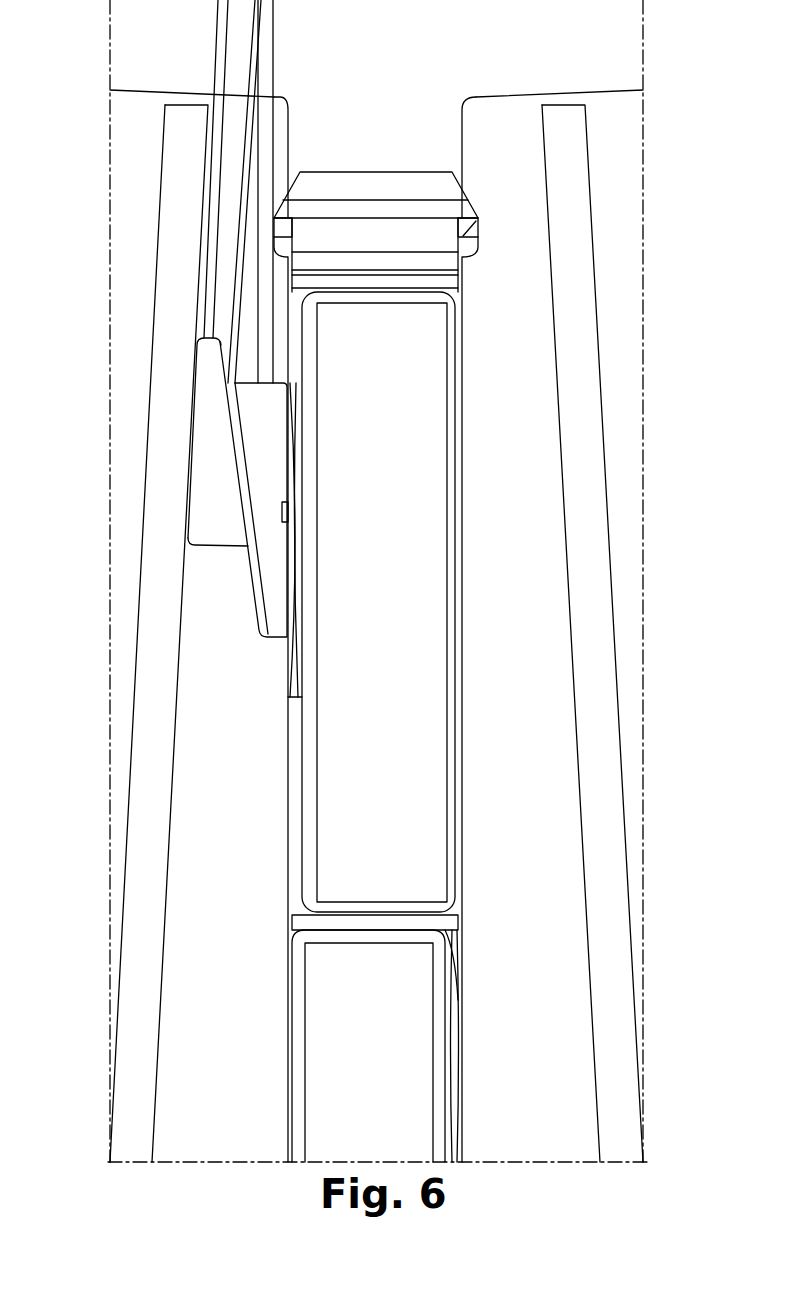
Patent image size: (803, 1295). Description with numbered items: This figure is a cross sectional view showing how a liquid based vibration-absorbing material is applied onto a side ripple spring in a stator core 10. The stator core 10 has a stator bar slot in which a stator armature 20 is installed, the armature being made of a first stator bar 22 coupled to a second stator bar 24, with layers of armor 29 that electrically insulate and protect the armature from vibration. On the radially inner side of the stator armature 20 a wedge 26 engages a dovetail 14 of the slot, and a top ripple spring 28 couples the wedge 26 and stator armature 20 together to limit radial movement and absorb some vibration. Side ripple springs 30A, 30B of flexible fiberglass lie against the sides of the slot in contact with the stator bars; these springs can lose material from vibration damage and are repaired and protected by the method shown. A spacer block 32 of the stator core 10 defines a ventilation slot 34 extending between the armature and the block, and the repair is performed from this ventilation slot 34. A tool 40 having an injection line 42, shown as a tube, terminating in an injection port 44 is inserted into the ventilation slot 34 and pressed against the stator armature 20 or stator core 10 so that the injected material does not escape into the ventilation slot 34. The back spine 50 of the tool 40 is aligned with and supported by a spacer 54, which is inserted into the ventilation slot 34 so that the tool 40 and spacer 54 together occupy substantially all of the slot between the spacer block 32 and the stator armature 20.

The stator core 10 is at (135, 90).
The dovetail 14 is at (462, 247).
The stator armature 20 is at (281, 922).
The first stator bar 22 is at (397, 703).
The second stator bar 24 is at (340, 1002).
The wedge 26 is at (375, 185).
The top ripple spring 28 is at (418, 263).
The armor 29 is at (455, 892).
The side ripple spring 30A is at (288, 650).
The side ripple spring 30B is at (452, 995).
The spacer block 32 is at (130, 979).
The ventilation slot 34 is at (480, 527).
The tool 40 is at (273, 553).
The injection line 42 is at (268, 142).
The injection port 44 is at (280, 512).
The back spine 50 is at (237, 287).
The spacer 54 is at (212, 418).